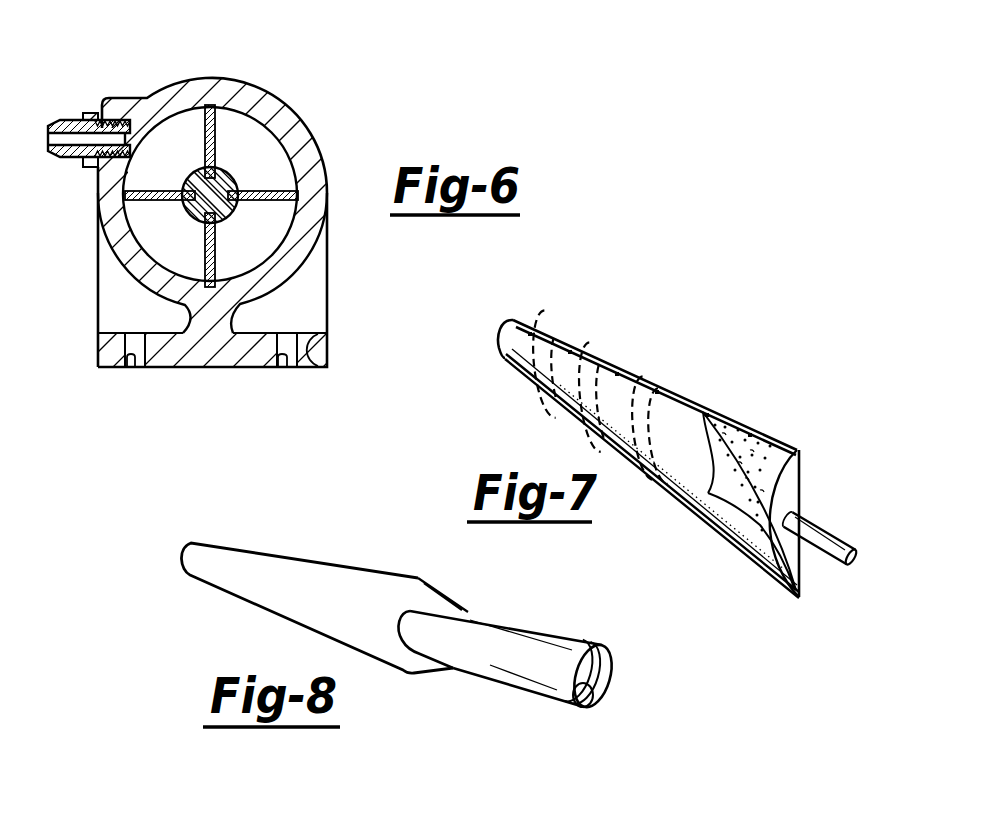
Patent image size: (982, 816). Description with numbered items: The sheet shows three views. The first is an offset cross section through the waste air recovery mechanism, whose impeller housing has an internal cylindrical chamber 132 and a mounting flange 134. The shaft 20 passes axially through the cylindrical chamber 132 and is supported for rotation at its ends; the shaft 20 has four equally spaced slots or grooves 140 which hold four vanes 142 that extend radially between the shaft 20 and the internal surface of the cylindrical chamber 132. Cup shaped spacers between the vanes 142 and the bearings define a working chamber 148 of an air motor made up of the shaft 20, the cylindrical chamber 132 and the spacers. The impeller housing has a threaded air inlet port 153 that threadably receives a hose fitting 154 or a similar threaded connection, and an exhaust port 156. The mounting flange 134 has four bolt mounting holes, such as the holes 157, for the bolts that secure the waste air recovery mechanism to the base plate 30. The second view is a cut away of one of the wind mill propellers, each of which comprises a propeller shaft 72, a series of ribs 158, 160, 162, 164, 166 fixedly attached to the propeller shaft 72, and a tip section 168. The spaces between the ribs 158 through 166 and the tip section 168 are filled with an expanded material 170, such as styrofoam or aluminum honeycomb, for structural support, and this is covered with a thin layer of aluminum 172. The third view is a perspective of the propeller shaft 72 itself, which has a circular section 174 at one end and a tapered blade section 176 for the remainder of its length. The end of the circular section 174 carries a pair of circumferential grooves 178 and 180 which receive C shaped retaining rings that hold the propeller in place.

In FIG. 6, the shaft 20 is at (184, 263).
In FIG. 6, the base plate 30 is at (222, 217).
In FIG. 7, the propeller shaft 72 is at (824, 516).
In FIG. 8, the propeller shaft 72 is at (505, 580).
In FIG. 6, the cylindrical chamber 132 is at (210, 159).
In FIG. 6, the mounting flange 134 is at (257, 335).
In FIG. 6, the slots or grooves 140 is at (258, 189).
In FIG. 6, the vanes 142 is at (207, 200).
In FIG. 6, the working chamber 148 is at (171, 244).
In FIG. 6, the threaded air inlet port 153 is at (138, 102).
In FIG. 6, the hose fitting 154 is at (95, 99).
In FIG. 6, the exhaust port 156 is at (362, 138).
In FIG. 6, the bolt mounting holes 157 is at (250, 381).
In FIG. 7, the rib 158 is at (818, 491).
In FIG. 7, the rib 160 is at (748, 429).
In FIG. 7, the rib 162 is at (671, 392).
In FIG. 7, the rib 164 is at (615, 373).
In FIG. 7, the rib 166 is at (567, 344).
In FIG. 7, the tip section 168 is at (624, 459).
In FIG. 7, the expanded material 170 is at (759, 390).
In FIG. 7, the thin layer of aluminum 172 is at (731, 501).
In FIG. 8, the circular section 174 is at (509, 645).
In FIG. 8, the tapered blade section 176 is at (324, 593).
In FIG. 8, the circumferential groove 178 is at (549, 701).
In FIG. 8, the circumferential groove 180 is at (603, 723).